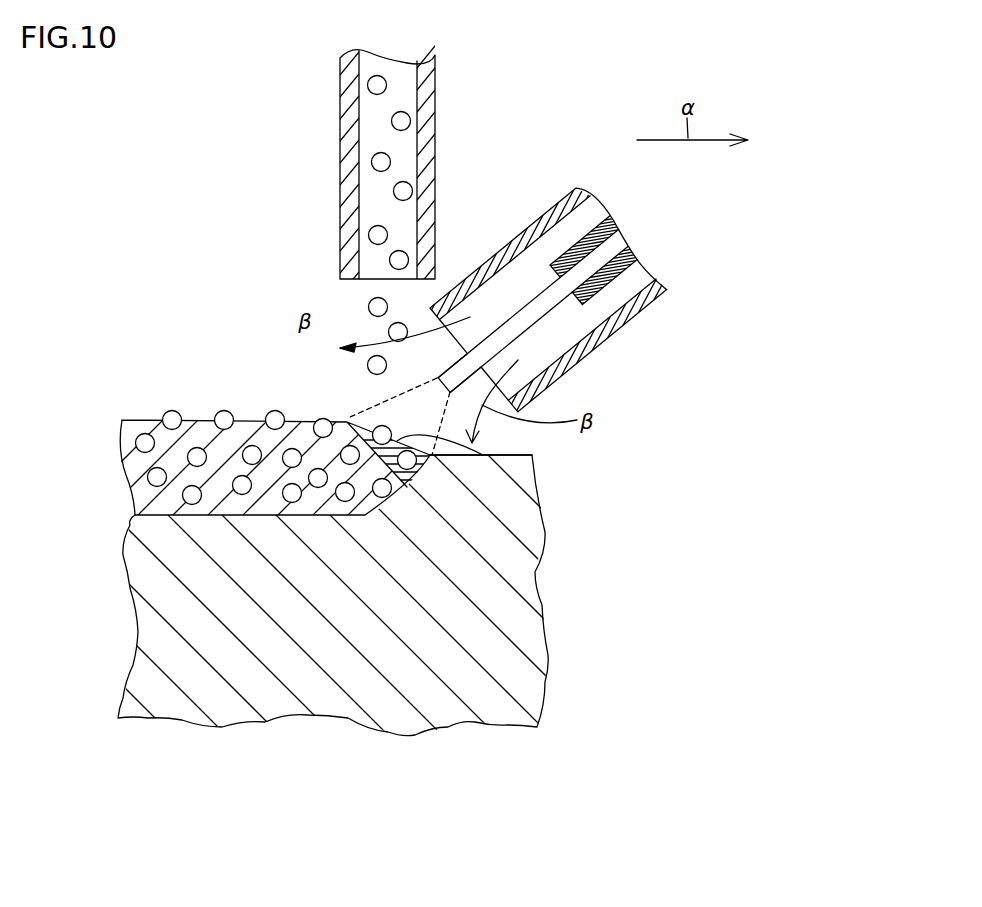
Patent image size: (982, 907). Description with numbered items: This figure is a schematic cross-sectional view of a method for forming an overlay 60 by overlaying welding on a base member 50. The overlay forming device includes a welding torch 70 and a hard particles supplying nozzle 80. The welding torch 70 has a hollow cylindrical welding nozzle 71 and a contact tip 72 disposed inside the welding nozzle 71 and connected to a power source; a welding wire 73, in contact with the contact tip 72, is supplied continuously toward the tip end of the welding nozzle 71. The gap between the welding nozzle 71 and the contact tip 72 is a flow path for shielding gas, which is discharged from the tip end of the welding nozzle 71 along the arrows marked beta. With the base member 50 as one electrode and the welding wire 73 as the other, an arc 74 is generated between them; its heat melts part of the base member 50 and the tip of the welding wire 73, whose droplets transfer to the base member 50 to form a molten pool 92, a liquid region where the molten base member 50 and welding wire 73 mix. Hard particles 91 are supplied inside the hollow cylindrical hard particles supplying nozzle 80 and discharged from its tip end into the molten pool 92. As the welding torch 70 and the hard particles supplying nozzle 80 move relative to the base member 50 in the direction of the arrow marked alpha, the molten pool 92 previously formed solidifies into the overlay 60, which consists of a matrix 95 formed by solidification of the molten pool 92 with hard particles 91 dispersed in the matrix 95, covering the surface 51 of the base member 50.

The base member 50 is at (568, 572).
The surface of the base member 51 is at (501, 455).
The overlay 60 is at (326, 426).
The welding torch 70 is at (568, 298).
The welding nozzle 71 is at (522, 242).
The contact tip 72 is at (575, 242).
The welding wire 73 is at (540, 304).
The arc 74 is at (413, 413).
The hard particles supplying nozzle 80 is at (427, 150).
The hard particles 91 is at (375, 86).
The molten pool 92 is at (490, 456).
The matrix 95 is at (248, 430).